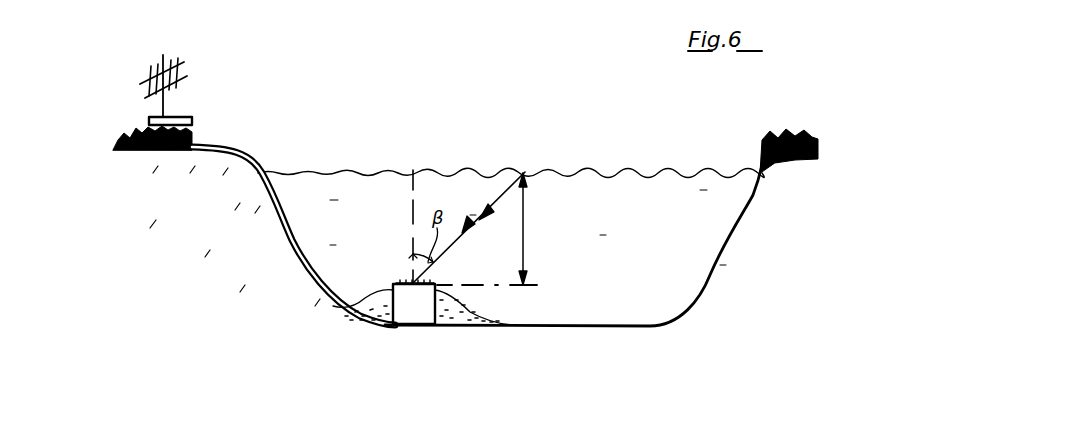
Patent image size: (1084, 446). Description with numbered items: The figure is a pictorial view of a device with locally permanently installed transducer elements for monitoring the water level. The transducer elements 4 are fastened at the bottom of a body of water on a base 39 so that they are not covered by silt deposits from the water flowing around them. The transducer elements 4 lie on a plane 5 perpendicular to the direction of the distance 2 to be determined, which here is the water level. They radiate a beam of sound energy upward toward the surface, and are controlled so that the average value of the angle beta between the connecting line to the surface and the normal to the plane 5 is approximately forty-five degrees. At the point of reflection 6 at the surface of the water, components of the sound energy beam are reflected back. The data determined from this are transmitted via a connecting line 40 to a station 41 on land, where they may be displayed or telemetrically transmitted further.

The station 41 is at (192, 126).
The connecting line 40 is at (287, 211).
The base 39 is at (418, 312).
The transducer elements 4 is at (434, 284).
The plane 5 is at (487, 287).
The distance 2 is at (525, 223).
The point of reflection 6 is at (525, 170).